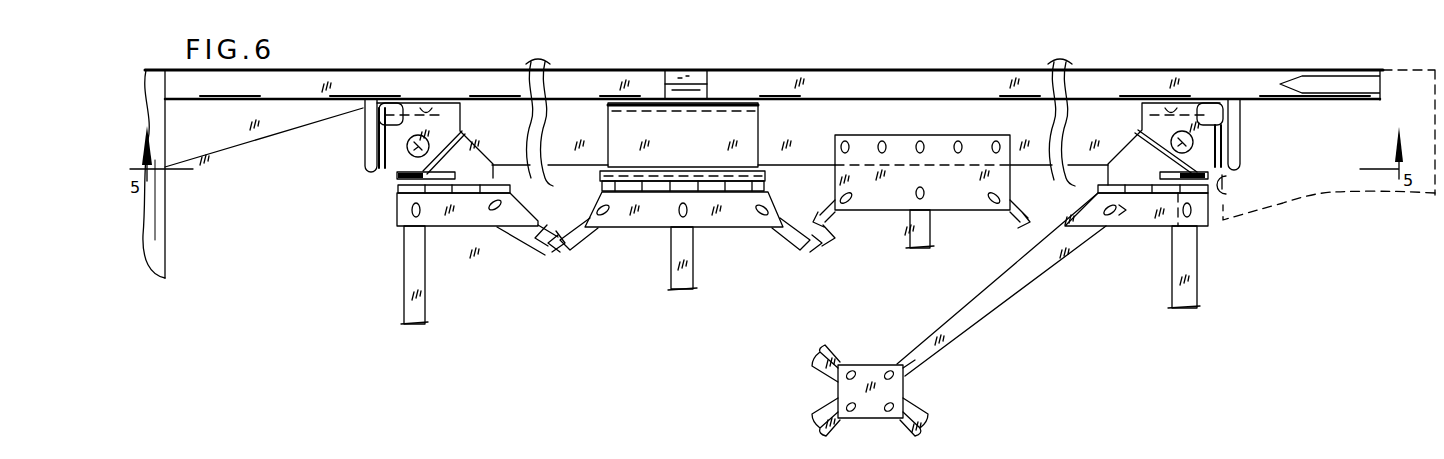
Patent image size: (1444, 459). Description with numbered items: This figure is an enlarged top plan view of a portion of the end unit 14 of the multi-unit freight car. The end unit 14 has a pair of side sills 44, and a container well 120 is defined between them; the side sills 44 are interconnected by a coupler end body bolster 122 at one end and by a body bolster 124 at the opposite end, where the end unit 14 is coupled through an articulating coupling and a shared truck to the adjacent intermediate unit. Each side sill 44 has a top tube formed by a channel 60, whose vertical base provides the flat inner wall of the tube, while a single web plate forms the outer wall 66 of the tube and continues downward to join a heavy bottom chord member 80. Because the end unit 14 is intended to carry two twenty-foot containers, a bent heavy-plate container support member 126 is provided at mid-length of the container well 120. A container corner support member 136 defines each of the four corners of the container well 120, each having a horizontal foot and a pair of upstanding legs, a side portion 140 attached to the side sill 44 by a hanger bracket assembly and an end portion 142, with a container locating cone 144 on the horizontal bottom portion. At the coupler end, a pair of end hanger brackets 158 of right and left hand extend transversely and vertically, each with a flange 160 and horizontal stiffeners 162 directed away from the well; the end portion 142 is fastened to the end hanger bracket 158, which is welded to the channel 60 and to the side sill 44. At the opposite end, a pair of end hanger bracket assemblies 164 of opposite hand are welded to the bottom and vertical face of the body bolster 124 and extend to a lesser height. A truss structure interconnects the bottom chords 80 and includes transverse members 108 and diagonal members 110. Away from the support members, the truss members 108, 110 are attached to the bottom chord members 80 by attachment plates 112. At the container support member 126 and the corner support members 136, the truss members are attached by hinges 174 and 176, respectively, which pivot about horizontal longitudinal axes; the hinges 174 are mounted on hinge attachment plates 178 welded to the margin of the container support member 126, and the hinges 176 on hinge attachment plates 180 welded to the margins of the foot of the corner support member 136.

The end unit 14 is at (1146, 67).
The side sill 44 is at (984, 82).
The channel 60 is at (772, 89).
The outer wall 66 is at (836, 70).
The bottom chord member 80 is at (1062, 171).
The transverse member 108 is at (426, 286).
The diagonal member 110 is at (560, 245).
The attachment plate 112 is at (965, 190).
The container well 120 is at (527, 92).
The coupler end body bolster 122 is at (162, 236).
The body bolster 124 is at (1322, 199).
The container support member 126 is at (758, 121).
The container corner support member 136 is at (452, 124).
The side portion 140 is at (420, 108).
The end portion 142 is at (388, 172).
The container locating cone 144 is at (407, 146).
The end hanger bracket 158 is at (378, 176).
The flange 160 is at (365, 177).
The horizontal stiffener 162 is at (365, 127).
The end hanger bracket assembly 164 is at (1226, 190).
The hinge 174 is at (732, 223).
The hinge 176 is at (470, 214).
The hinge attachment plate 178 is at (663, 182).
The hinge attachment plate 180 is at (425, 176).